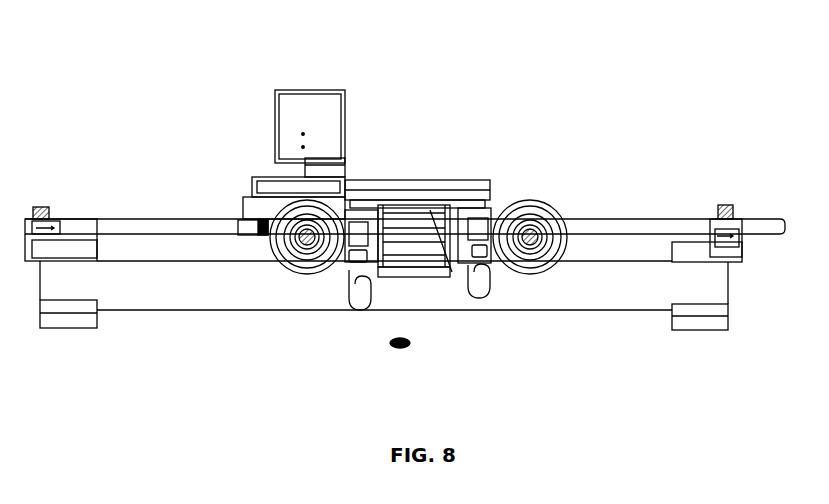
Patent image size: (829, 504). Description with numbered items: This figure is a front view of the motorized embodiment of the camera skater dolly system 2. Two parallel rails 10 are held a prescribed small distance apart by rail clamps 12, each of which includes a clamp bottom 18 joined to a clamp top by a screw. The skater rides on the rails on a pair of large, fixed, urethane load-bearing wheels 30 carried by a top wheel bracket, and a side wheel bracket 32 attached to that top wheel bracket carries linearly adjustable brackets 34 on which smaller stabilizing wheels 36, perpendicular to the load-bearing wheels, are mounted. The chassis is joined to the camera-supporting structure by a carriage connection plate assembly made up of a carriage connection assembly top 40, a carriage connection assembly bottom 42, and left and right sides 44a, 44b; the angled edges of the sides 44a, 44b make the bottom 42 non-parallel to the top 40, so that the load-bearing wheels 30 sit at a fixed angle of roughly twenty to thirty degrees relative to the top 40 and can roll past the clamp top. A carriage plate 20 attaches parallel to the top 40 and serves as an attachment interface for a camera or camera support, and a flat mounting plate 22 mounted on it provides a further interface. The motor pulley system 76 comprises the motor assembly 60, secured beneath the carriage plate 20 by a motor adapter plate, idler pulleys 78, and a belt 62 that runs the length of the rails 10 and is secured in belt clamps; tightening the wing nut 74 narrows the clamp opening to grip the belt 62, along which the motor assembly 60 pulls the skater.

The system 2 is at (666, 58).
The rails 10 is at (166, 300).
The rail clamps 12 is at (42, 355).
The clamp bottom 18 is at (82, 328).
The carriage plate 20 is at (397, 197).
The flat mounting plate 22 is at (483, 180).
The load-bearing wheels 30 is at (300, 272).
The side wheel bracket 32 is at (490, 272).
The linearly adjustable brackets 34 is at (372, 300).
The stabilizing wheels 36 is at (340, 311).
The carriage connection assembly top 40 is at (453, 250).
The carriage connection assembly bottom 42 is at (403, 265).
The carriage connection assembly left side 44a is at (385, 263).
The carriage connection assembly right side 44b is at (458, 253).
The motor assembly 60 is at (319, 98).
The belt 62 is at (107, 218).
The wing nut 74 is at (38, 206).
The motor pulley system 76 is at (238, 152).
The idler pulleys 78 is at (240, 226).